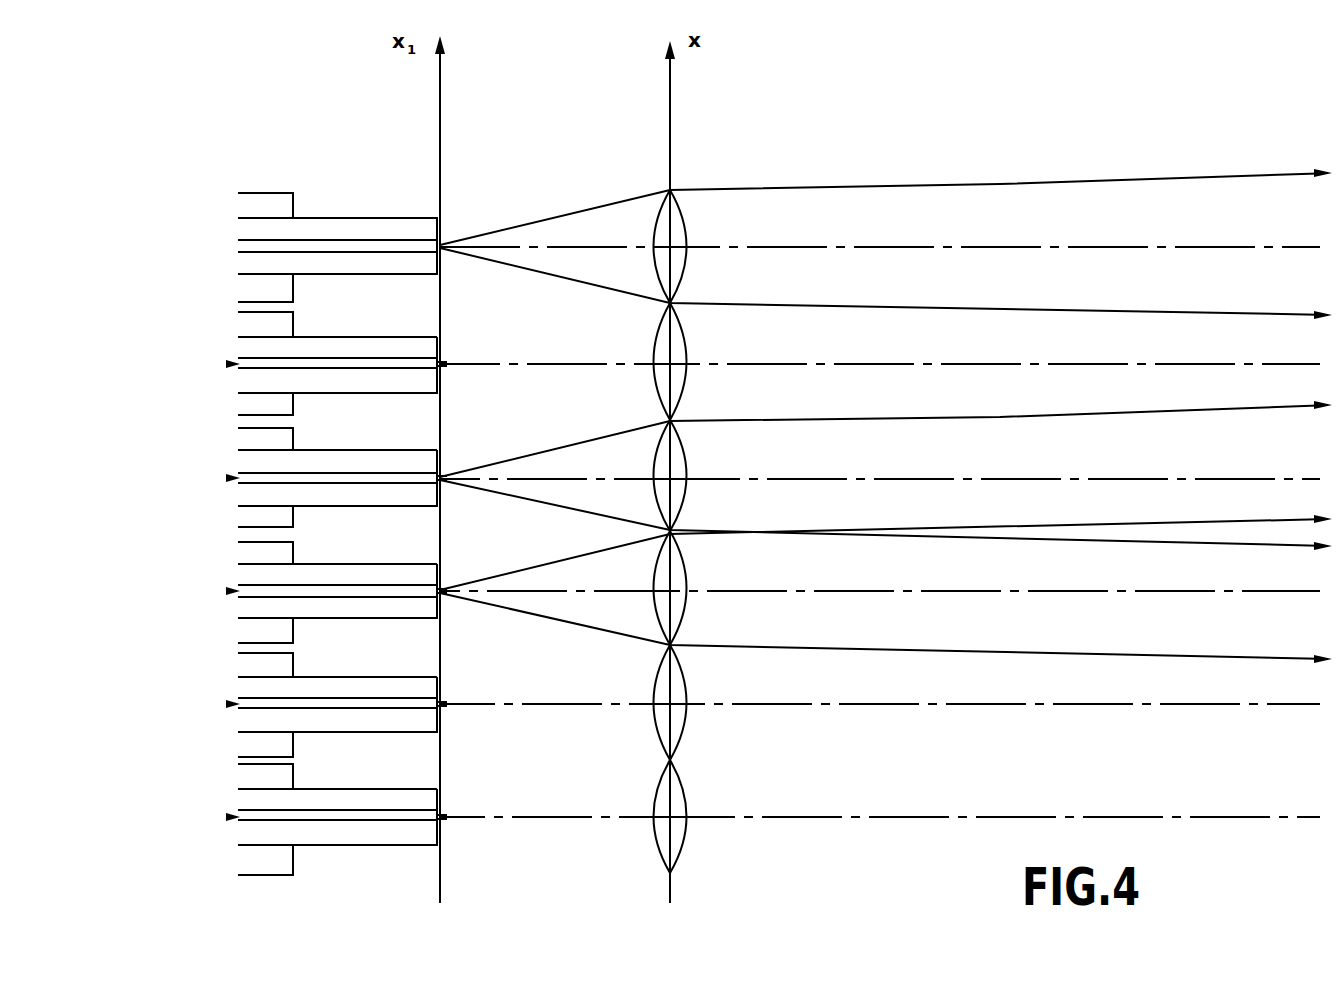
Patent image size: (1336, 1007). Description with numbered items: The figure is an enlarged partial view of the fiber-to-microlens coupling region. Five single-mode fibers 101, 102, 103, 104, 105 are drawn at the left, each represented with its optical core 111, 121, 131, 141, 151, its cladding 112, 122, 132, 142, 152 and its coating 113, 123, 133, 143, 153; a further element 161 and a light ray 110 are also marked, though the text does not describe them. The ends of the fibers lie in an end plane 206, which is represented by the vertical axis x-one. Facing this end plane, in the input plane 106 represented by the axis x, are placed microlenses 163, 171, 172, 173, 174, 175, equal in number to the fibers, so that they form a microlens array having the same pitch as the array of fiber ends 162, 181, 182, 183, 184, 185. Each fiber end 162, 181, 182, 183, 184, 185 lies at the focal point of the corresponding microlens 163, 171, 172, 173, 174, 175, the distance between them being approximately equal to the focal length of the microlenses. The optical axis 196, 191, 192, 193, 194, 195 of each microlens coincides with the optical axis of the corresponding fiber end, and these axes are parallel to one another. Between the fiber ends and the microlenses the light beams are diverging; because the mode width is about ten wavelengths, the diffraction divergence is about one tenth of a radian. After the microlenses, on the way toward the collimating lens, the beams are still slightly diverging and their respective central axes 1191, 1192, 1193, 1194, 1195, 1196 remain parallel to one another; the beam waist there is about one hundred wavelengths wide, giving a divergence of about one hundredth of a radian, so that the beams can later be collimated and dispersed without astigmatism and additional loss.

The single-mode fiber 101 is at (228, 364).
The single-mode fiber 102 is at (228, 478).
The single-mode fiber 103 is at (228, 591).
The single-mode fiber 104 is at (228, 704).
The single-mode fiber 105 is at (228, 817).
The input plane 106 is at (670, 112).
The output light ray 110 is at (1030, 182).
The optical core 111 is at (390, 365).
The cladding 112 is at (327, 350).
The coating 113 is at (250, 323).
The optical core 121 is at (392, 478).
The cladding 122 is at (297, 462).
The coating 123 is at (243, 438).
The optical core 131 is at (392, 590).
The cladding 132 is at (297, 578).
The coating 133 is at (245, 553).
The optical core 141 is at (390, 705).
The cladding 142 is at (297, 692).
The coating 143 is at (247, 663).
The optical core 151 is at (388, 818).
The cladding 152 is at (297, 802).
The coating 153 is at (247, 777).
The electrode 161 is at (245, 203).
The fiber end 162 is at (455, 240).
The microlens 163 is at (702, 258).
The microlens 171 is at (702, 372).
The microlens 172 is at (702, 485).
The microlens 173 is at (700, 598).
The microlens 174 is at (702, 715).
The microlens 175 is at (702, 830).
The fiber end 181 is at (447, 362).
The fiber end 182 is at (450, 478).
The fiber end 183 is at (450, 590).
The fiber end 184 is at (447, 704).
The fiber end 185 is at (445, 817).
The optical axis 191 is at (572, 363).
The optical axis 192 is at (592, 478).
The optical axis 193 is at (585, 590).
The optical axis 194 is at (572, 704).
The optical axis 195 is at (592, 816).
The optical axis 196 is at (583, 247).
The end plane 206 is at (440, 123).
The central axis 1191 is at (1167, 363).
The central axis 1192 is at (1160, 479).
The central axis 1193 is at (1157, 591).
The central axis 1194 is at (1192, 704).
The central axis 1195 is at (1173, 816).
The central axis 1196 is at (1183, 247).